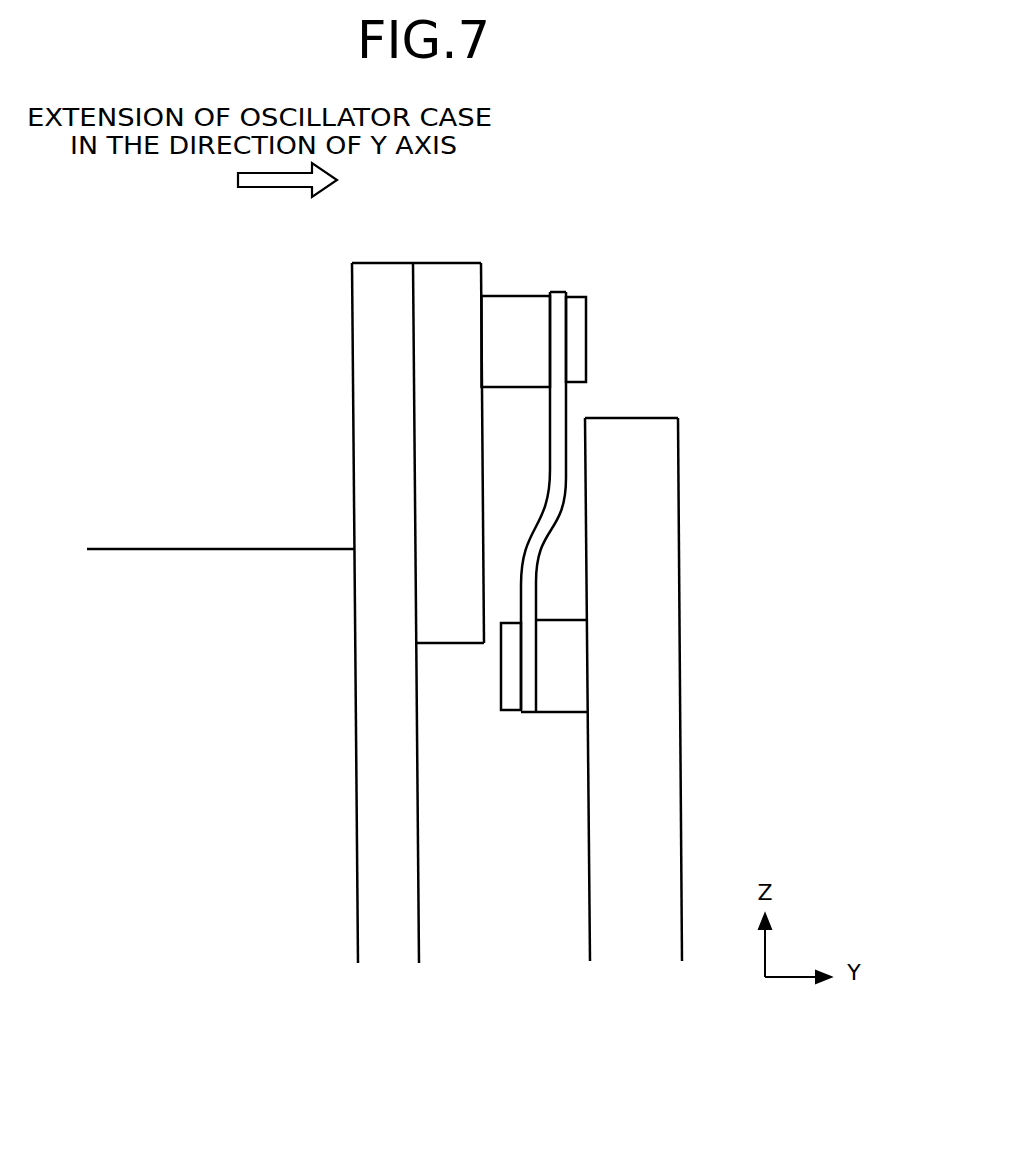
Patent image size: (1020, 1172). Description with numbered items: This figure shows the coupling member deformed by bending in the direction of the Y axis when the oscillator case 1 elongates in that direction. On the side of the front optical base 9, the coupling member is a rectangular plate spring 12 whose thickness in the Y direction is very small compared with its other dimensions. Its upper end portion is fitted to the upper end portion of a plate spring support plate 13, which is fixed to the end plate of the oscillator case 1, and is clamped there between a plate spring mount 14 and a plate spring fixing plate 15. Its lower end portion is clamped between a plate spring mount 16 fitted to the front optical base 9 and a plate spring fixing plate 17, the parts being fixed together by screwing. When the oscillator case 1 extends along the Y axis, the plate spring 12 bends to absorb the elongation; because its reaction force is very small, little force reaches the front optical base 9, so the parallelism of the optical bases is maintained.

The oscillator case 1 is at (217, 547).
The front optical base 9 is at (680, 465).
The plate spring 12 is at (557, 290).
The plate spring support plate 13 is at (447, 262).
The plate spring mount 14 is at (498, 295).
The plate spring fixing plate 15 is at (587, 312).
The plate spring mount 16 is at (560, 713).
The plate spring fixing plate 17 is at (503, 713).